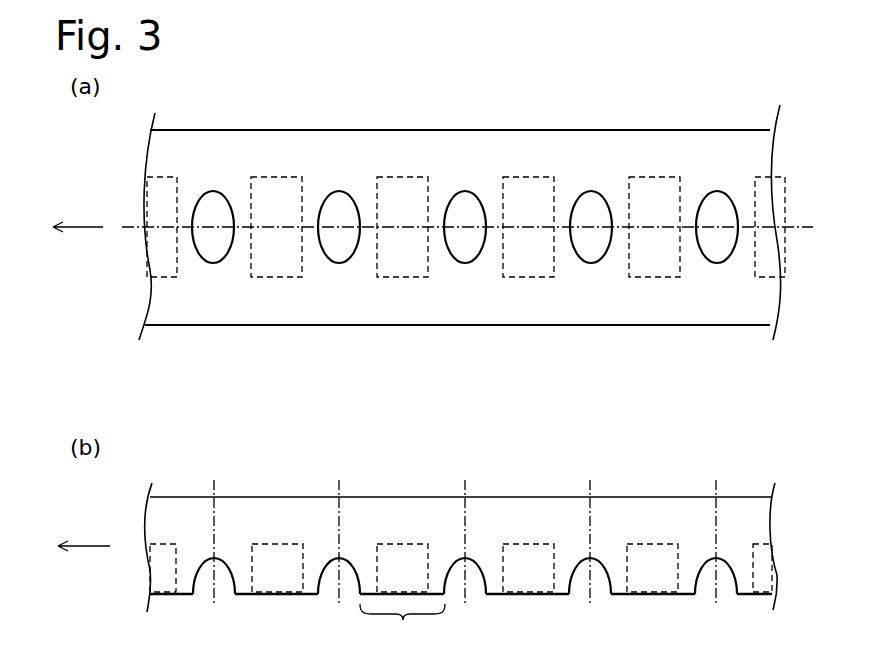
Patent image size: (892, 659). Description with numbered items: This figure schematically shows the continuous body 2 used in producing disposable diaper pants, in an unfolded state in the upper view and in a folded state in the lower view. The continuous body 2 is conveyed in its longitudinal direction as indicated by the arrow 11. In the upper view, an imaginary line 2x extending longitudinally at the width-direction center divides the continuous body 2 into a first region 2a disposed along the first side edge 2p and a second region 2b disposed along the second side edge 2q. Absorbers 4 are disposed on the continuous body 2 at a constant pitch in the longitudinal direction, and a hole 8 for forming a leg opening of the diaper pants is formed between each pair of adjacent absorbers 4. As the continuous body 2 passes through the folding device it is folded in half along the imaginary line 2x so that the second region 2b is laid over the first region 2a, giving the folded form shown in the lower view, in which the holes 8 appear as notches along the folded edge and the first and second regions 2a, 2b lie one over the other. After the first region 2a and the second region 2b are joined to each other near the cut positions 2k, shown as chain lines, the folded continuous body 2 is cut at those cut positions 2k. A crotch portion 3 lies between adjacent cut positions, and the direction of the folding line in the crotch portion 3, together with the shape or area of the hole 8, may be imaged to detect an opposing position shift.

The continuous body 2 is at (718, 114).
The first side edge 2p is at (258, 130).
The second side edge 2q is at (258, 325).
The first region 2a is at (328, 147).
The second region 2b is at (325, 308).
The imaginary line 2x is at (797, 222).
The cut positions 2k is at (340, 490).
The crotch portion 3 is at (402, 630).
The absorbers 4 is at (533, 173).
The hole 8 is at (575, 210).
The arrow 11 is at (85, 227).